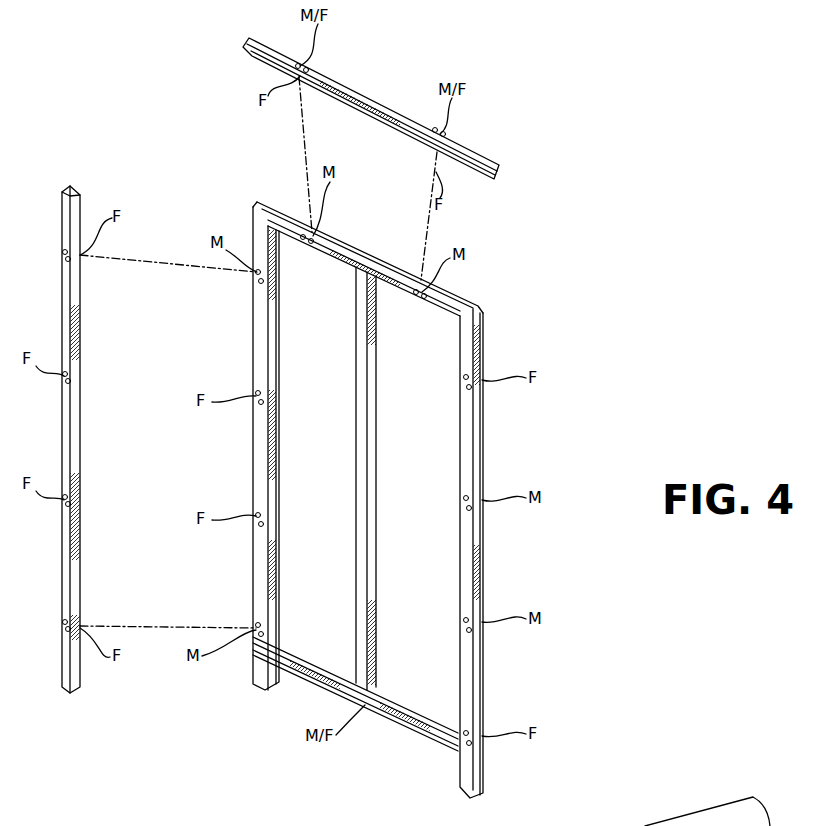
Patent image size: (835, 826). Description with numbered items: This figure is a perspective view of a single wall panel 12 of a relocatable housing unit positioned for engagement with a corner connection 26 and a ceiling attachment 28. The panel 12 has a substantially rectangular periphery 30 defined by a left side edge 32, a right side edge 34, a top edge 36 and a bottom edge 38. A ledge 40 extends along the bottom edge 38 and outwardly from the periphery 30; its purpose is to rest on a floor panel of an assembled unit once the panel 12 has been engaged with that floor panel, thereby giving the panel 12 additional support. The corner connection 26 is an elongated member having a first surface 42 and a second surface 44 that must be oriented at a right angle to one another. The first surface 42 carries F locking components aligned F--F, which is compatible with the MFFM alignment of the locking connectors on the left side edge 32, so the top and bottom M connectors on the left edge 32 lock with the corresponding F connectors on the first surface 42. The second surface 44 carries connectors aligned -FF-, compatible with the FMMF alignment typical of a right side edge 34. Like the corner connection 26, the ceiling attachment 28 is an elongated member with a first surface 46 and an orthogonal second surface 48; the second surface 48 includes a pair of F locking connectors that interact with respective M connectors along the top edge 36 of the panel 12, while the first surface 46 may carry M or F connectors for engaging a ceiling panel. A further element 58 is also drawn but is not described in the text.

The panel 12 is at (371, 466).
The corner connection 26 is at (62, 330).
The ceiling attachment 28 is at (247, 44).
The periphery 30 is at (483, 306).
The left side edge 32 is at (253, 232).
The right side edge 34 is at (483, 410).
The top edge 36 is at (258, 204).
The bottom edge 38 is at (368, 712).
The ledge 40 is at (300, 680).
The first surface 42 is at (74, 186).
The second surface 44 is at (63, 207).
The first surface 46 is at (485, 160).
The second surface 48 is at (500, 170).
The panel 58 is at (647, 825).